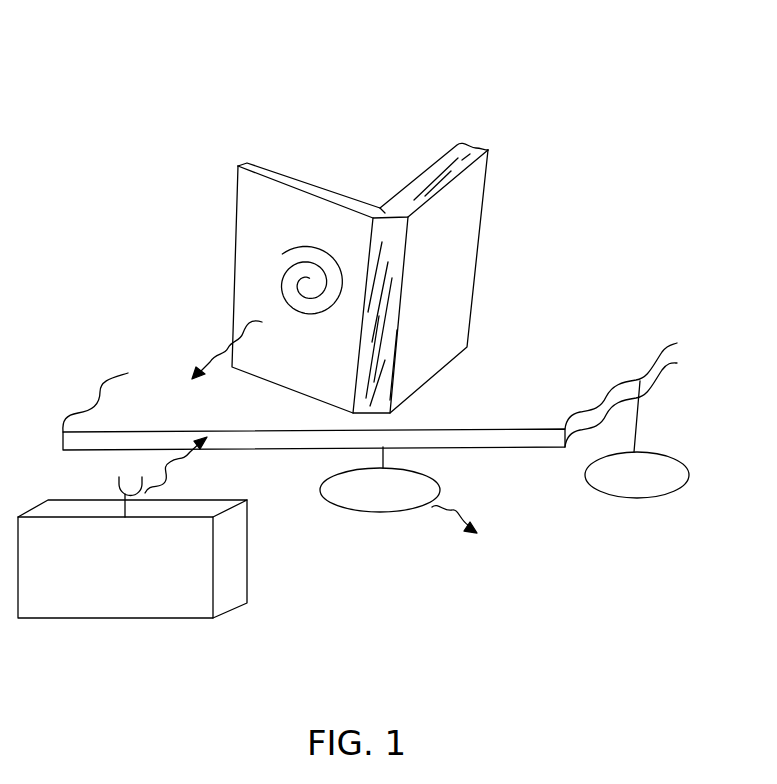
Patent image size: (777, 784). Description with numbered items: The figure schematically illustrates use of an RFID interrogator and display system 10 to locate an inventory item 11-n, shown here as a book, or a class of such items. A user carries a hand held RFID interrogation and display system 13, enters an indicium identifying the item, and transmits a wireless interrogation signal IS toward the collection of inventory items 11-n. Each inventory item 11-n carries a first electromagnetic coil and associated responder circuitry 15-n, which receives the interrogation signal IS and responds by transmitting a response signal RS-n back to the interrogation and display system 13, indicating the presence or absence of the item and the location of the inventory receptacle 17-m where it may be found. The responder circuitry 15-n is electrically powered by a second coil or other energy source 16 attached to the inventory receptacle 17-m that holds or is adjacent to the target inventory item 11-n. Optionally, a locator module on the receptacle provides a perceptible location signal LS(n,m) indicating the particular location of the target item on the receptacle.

The RFID interrogator and display system 10 is at (558, 132).
The inventory item 11-n is at (453, 243).
The RFID interrogation and display system 13 is at (233, 568).
The first electromagnetic coil and associated responder circuitry 15-n is at (275, 291).
The second coil or other energy source 16 is at (680, 467).
The inventory receptacle 17-m is at (550, 442).